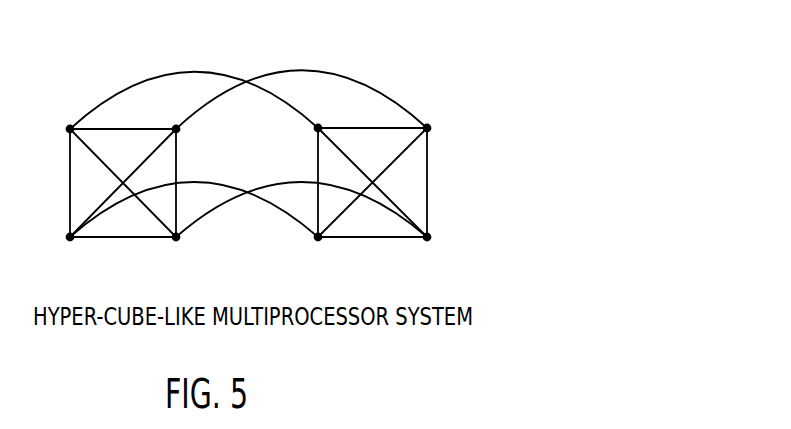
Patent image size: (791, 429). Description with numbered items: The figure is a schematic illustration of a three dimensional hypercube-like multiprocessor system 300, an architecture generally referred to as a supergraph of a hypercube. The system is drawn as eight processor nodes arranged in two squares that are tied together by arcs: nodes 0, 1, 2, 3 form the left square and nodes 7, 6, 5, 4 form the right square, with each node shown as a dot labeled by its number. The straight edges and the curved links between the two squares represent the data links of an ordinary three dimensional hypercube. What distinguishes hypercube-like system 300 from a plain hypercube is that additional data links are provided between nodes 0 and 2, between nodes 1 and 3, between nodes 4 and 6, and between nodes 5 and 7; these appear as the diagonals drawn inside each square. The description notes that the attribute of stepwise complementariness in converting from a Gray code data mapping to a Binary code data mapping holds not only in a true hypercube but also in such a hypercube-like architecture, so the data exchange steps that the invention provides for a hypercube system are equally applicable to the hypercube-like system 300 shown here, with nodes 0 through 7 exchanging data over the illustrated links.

The hypercube-like multiprocessor system 300 is at (248, 143).
The node 0 is at (62, 113).
The node 1 is at (168, 113).
The node 2 is at (168, 252).
The node 3 is at (62, 252).
The node 4 is at (322, 252).
The node 5 is at (436, 252).
The node 6 is at (435, 112).
The node 7 is at (322, 112).